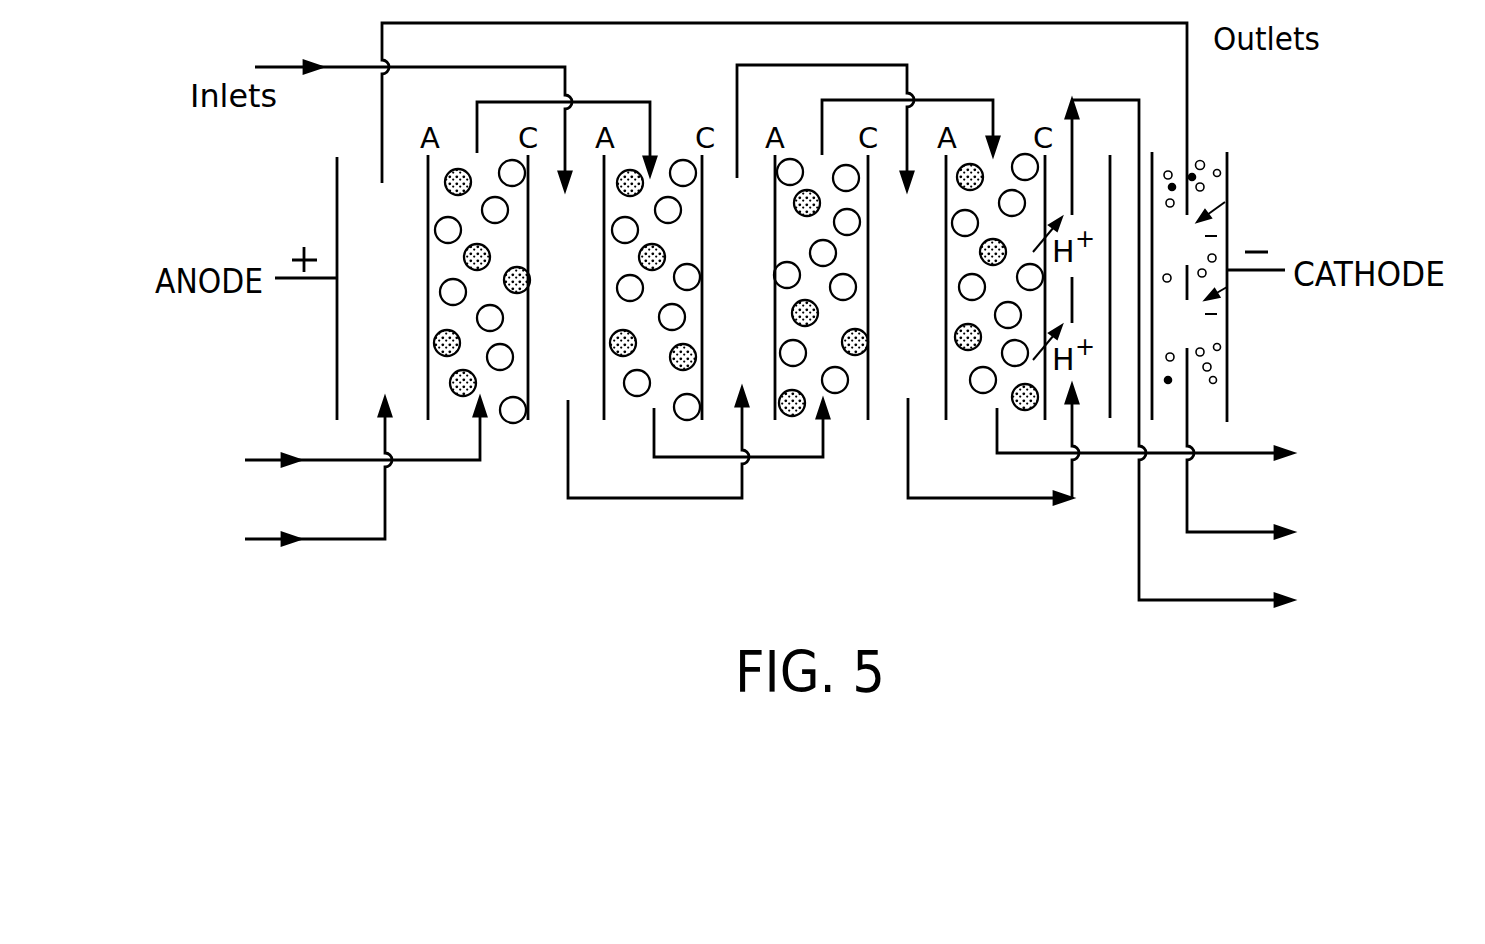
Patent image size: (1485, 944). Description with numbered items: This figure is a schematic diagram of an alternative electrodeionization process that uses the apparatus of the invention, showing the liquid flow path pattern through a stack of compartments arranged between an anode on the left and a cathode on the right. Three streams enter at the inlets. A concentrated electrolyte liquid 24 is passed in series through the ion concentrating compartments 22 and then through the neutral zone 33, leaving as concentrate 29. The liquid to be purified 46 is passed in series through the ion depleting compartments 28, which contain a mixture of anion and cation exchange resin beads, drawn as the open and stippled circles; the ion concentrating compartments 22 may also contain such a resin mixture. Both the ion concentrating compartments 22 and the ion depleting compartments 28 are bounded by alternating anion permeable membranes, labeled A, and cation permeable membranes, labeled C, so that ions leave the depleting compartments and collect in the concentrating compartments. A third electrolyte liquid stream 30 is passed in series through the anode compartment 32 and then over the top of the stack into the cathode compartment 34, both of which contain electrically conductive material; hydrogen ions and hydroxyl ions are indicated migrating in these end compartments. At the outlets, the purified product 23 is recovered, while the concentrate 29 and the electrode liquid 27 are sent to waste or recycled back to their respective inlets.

The ion concentrating compartments 22 is at (583, 232).
The purified product 23 is at (1229, 455).
The concentrated electrolyte liquid 24 is at (332, 67).
The electrode liquid 27 is at (1227, 533).
The ion depleting compartments 28 is at (618, 362).
The concentrate 29 is at (1138, 575).
The third electrolyte liquid stream 30 is at (387, 508).
The anode compartment 32 is at (403, 253).
The neutral zone 33 is at (1125, 157).
The cathode compartment 34 is at (1197, 155).
The liquid to be purified 46 is at (317, 460).